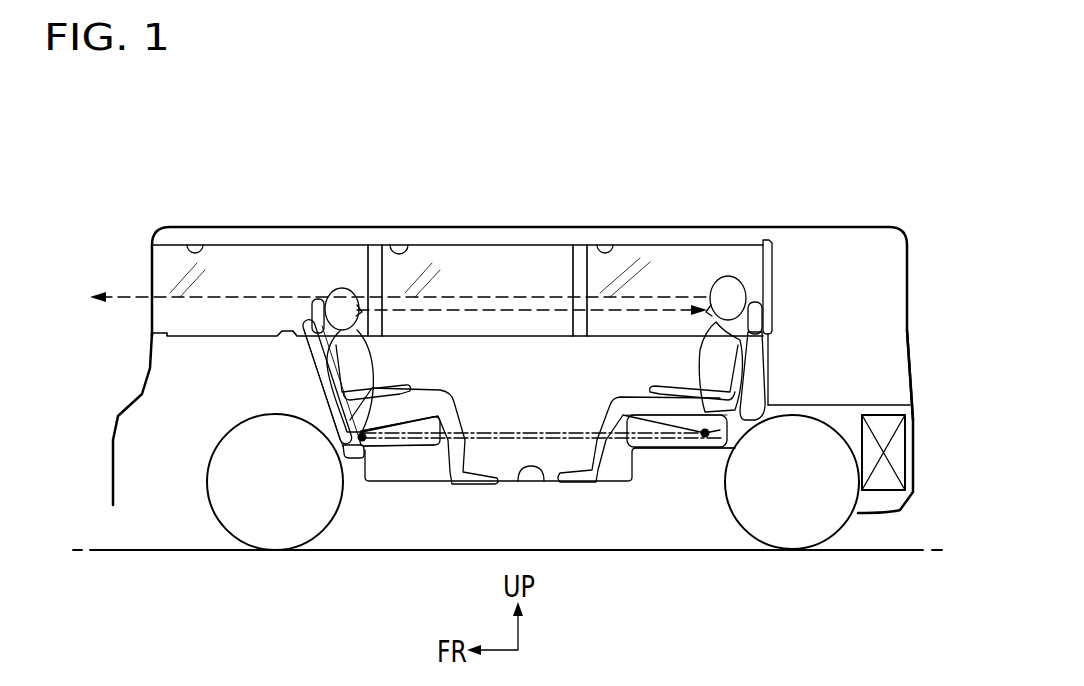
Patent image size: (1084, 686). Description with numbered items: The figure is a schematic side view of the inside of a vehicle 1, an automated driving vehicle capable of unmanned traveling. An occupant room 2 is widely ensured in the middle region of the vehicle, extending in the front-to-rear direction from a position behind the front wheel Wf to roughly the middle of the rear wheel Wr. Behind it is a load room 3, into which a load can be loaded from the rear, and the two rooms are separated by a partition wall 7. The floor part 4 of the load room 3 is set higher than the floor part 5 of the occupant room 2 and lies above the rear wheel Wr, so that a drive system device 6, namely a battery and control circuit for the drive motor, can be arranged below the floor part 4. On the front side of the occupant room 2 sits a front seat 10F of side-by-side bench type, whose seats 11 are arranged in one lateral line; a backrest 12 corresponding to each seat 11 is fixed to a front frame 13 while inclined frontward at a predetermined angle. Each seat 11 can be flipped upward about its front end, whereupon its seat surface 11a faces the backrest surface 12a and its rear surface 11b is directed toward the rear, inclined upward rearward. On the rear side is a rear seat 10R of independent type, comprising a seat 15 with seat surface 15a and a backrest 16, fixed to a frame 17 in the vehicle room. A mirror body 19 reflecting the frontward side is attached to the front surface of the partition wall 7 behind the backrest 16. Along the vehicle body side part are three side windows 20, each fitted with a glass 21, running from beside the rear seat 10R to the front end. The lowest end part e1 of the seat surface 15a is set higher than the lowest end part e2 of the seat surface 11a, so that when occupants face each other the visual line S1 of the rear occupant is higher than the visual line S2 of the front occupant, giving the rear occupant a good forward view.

The vehicle 1 is at (756, 174).
The occupant room 2 is at (488, 375).
The load room 3 is at (862, 323).
The floor part 4 is at (838, 403).
The floor part 5 is at (540, 470).
The drive system device 6 is at (900, 455).
The partition wall 7 is at (770, 358).
The front seat 10F is at (403, 375).
The rear seat 10R is at (760, 405).
The seat 11 is at (388, 450).
The seat surface 11a is at (407, 430).
The rear surface 11b is at (415, 446).
The backrest 12 is at (313, 360).
The backrest surface 12a is at (330, 373).
The front frame 13 is at (320, 391).
The seat 15 is at (682, 444).
The seat surface 15a is at (655, 417).
The backrest 16 is at (728, 398).
The frame 17 is at (650, 444).
The mirror body 19 is at (752, 265).
The side window 20 is at (176, 258).
The glass 21 is at (160, 237).
The visual line S1 is at (663, 297).
The visual line S2 is at (447, 308).
The front wheel Wf is at (222, 530).
The rear wheel Wr is at (845, 527).
The lowest end part e1 is at (705, 436).
The lowest end part e2 is at (368, 452).